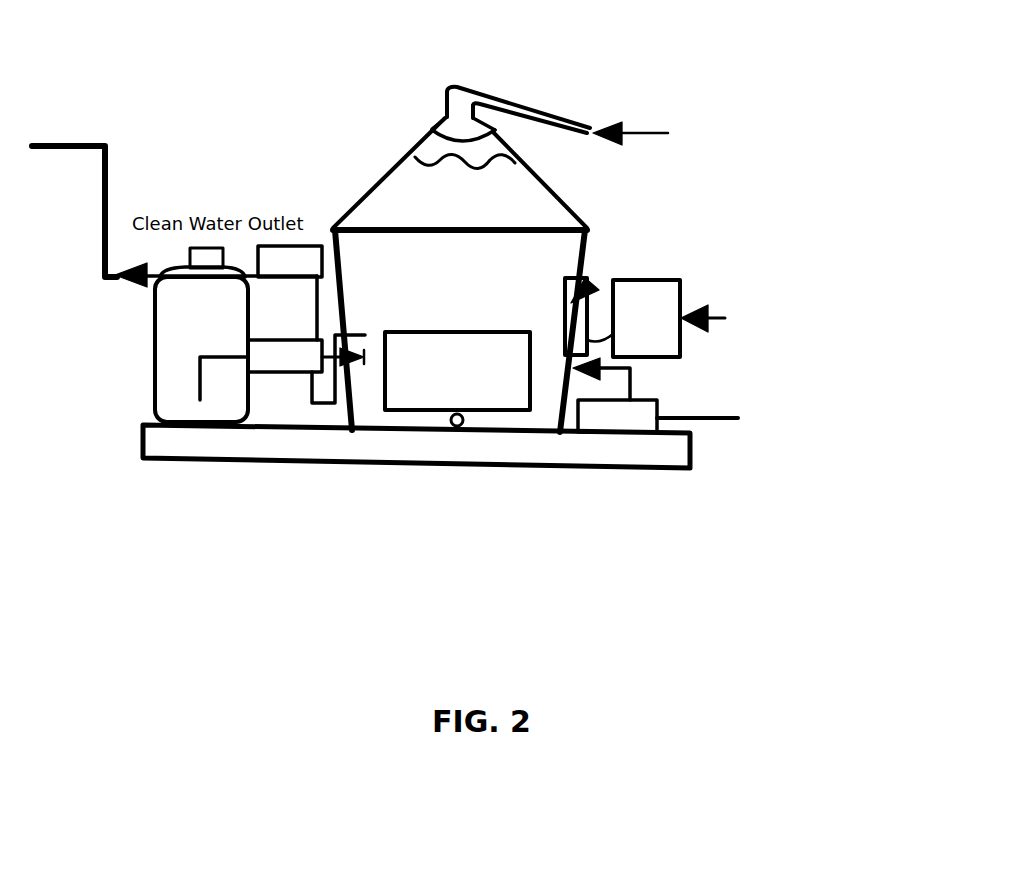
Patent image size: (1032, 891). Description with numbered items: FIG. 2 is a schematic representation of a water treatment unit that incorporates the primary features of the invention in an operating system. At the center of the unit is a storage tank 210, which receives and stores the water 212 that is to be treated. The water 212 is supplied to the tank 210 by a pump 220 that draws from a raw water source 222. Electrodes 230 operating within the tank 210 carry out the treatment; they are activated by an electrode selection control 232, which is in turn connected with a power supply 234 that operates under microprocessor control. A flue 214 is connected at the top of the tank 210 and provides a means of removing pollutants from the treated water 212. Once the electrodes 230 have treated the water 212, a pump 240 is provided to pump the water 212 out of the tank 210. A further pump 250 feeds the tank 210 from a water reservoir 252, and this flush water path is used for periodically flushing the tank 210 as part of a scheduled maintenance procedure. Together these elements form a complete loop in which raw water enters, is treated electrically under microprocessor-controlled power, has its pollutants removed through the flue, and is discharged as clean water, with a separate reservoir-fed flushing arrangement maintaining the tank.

The storage tank 210 is at (532, 433).
The water 212 is at (516, 184).
The flue 214 is at (463, 88).
The pump 220 is at (613, 467).
The raw water source 222 is at (798, 420).
The electrodes 230 is at (403, 430).
The electrode selection control 232 is at (590, 276).
The power supply 234 is at (687, 284).
The pump 240 is at (312, 246).
The further pump 250 is at (275, 372).
The water reservoir 252 is at (152, 377).